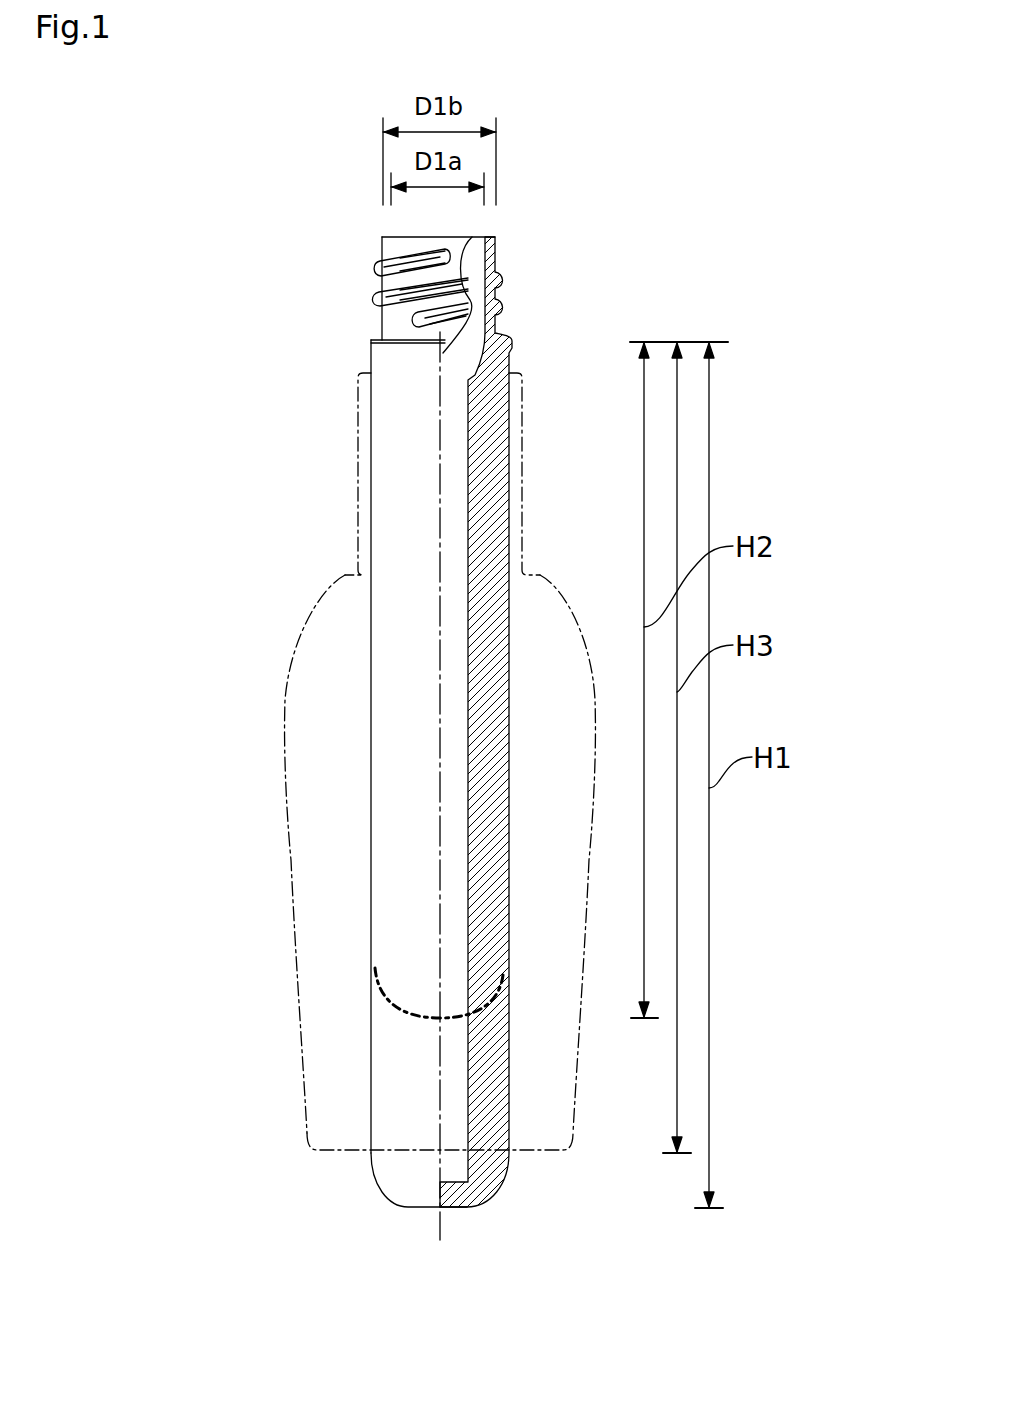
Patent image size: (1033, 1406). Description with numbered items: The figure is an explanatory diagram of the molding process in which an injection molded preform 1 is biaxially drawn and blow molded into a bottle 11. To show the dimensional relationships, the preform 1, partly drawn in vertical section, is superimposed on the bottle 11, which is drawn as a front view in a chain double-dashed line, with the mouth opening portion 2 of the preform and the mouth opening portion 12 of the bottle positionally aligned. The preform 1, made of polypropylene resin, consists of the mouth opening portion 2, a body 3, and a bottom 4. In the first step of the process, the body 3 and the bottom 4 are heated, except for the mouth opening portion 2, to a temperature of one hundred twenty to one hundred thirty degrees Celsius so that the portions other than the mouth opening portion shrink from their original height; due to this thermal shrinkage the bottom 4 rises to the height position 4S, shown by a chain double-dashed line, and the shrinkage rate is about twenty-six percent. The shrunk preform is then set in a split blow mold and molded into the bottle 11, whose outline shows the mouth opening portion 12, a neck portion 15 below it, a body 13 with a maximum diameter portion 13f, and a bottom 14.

The preform 1 is at (399, 751).
The mouth opening portion of preform 2 is at (365, 268).
The mouth opening portion of bottle 12 is at (390, 268).
The body 3 is at (395, 575).
The bottom 4 is at (346, 1146).
The bottom (obtained after thermal shrinkage) 4S is at (425, 1020).
The bottle 11 is at (374, 821).
The body 13 is at (350, 854).
The maximum diameter portion 13f is at (275, 705).
The bottom 14 is at (367, 1153).
The neck portion 15 is at (358, 467).